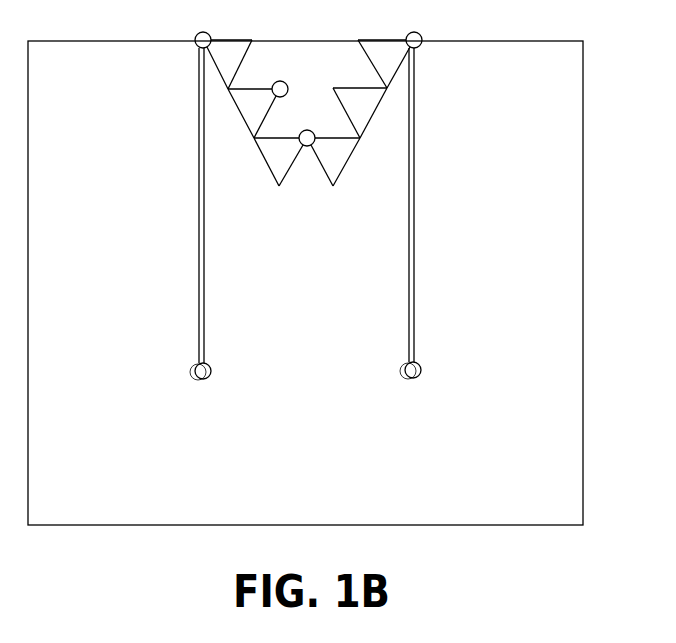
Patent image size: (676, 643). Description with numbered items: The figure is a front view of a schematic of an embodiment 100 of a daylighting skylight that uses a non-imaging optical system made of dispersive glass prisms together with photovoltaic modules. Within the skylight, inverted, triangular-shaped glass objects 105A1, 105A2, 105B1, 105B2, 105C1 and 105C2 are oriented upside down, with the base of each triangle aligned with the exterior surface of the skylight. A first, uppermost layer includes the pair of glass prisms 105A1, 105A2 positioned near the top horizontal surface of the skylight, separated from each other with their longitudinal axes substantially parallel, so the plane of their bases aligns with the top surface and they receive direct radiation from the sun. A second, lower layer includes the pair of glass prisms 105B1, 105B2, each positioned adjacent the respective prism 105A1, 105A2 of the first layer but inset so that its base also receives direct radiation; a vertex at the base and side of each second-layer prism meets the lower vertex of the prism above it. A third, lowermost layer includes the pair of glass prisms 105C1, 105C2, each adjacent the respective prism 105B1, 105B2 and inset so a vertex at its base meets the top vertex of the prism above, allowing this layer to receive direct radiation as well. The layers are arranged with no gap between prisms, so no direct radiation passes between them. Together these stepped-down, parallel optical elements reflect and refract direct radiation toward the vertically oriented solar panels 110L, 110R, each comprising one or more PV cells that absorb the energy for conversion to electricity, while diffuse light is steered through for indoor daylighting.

The embodiment 100 is at (434, 484).
The glass prism 105A1 is at (222, 77).
The glass prism 105B1 is at (240, 116).
The glass prism 105C1 is at (266, 163).
The glass prism 105A2 is at (397, 72).
The glass prism 105B2 is at (370, 117).
The glass prism 105C2 is at (350, 158).
The solar panel 110L is at (204, 312).
The solar panel 110R is at (414, 310).